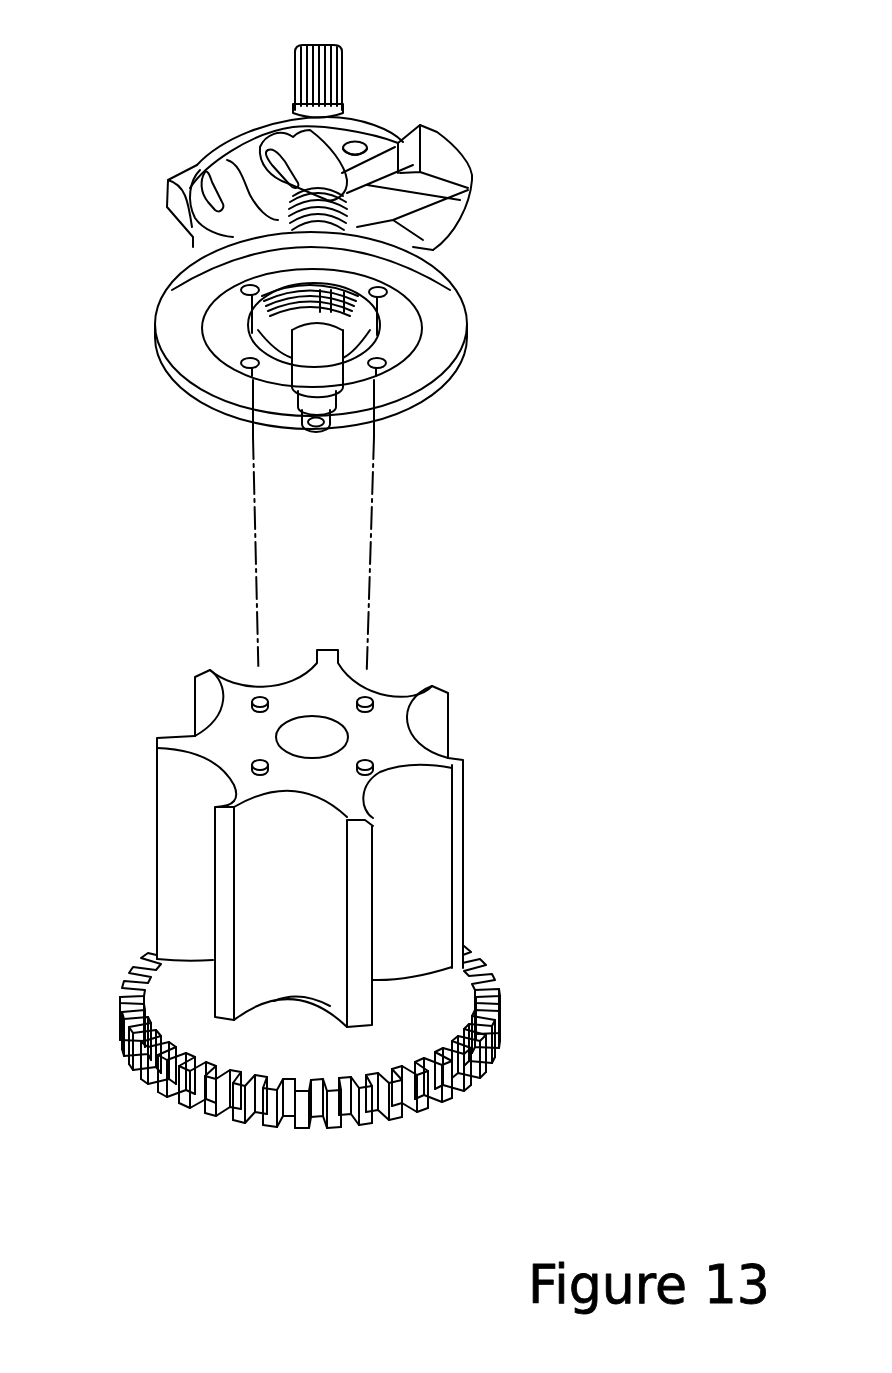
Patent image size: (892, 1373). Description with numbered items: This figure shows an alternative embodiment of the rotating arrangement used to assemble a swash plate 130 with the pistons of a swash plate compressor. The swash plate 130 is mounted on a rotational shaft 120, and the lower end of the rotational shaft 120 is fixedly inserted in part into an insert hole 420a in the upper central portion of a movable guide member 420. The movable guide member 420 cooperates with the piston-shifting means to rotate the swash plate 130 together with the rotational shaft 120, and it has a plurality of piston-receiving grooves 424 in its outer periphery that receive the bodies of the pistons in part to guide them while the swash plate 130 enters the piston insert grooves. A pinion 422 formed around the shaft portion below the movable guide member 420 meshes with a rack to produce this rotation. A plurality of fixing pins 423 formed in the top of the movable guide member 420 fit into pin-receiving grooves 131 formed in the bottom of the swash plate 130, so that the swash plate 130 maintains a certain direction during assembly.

The rotational shaft 120 is at (323, 80).
The swash plate 130 is at (425, 365).
The pin-receiving grooves 131 is at (240, 297).
The movable guide member 420 is at (255, 774).
The insert hole 420a is at (307, 730).
The pinion 422 is at (125, 985).
The fixing pins 423 is at (368, 696).
The piston-receiving grooves 424 is at (184, 771).